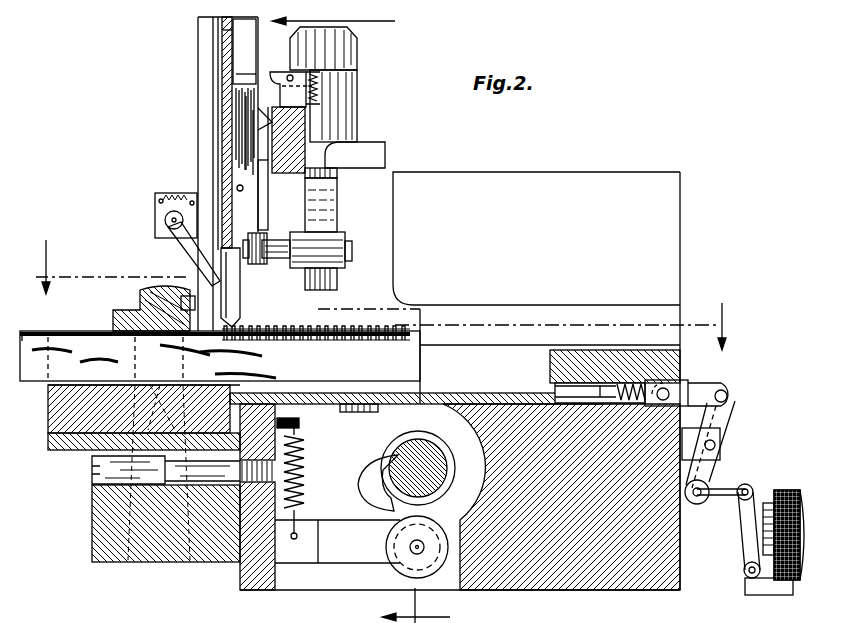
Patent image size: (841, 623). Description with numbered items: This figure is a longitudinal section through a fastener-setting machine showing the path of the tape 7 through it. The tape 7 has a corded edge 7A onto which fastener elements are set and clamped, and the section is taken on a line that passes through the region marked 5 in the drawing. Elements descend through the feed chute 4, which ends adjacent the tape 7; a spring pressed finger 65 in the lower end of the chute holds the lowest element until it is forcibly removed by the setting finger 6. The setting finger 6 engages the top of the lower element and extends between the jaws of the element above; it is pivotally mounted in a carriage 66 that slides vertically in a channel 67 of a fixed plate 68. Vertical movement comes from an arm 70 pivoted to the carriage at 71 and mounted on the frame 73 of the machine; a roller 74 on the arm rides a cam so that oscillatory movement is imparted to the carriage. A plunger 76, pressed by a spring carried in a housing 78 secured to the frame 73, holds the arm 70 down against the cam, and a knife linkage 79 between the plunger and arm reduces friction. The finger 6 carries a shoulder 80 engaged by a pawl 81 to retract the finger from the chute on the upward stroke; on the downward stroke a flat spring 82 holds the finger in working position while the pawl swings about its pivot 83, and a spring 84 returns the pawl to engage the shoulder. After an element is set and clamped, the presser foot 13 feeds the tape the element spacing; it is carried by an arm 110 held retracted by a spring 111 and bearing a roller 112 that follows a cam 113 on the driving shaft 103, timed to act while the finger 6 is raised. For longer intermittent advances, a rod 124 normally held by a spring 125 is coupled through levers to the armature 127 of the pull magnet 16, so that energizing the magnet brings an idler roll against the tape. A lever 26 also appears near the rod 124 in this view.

The feed chute 4 is at (198, 124).
The section line 5- 5 is at (361, 319).
The setting finger 6 is at (240, 301).
The tape 7 is at (398, 372).
The corded edge 7A is at (30, 332).
The presser foot 13 is at (147, 304).
The pull magnet 16 is at (792, 492).
The bell crank lever 26 is at (724, 407).
The spring pressed finger 65 is at (206, 278).
The carriage 66 is at (248, 96).
The channel 67 is at (236, 73).
The fixed plate 68 is at (229, 27).
The arm 70 is at (318, 248).
The pivot 71 is at (347, 252).
The frame 73 is at (536, 238).
The roller 74 is at (321, 289).
The plunger 76 is at (340, 167).
The housing 78 is at (348, 87).
The knife linkage 79 is at (332, 181).
The shoulder 80 is at (275, 123).
The pawl 81 is at (278, 72).
The flat spring 82 is at (264, 219).
The pivot 83 is at (312, 78).
The spring 84 is at (322, 92).
The driving shaft 103 is at (411, 452).
The arm 110 is at (328, 565).
The spring 111 is at (304, 470).
The roller 112 is at (420, 521).
The cam 113 is at (372, 486).
The rod 124 is at (578, 392).
The spring 125 is at (627, 392).
The armature 127 is at (748, 532).